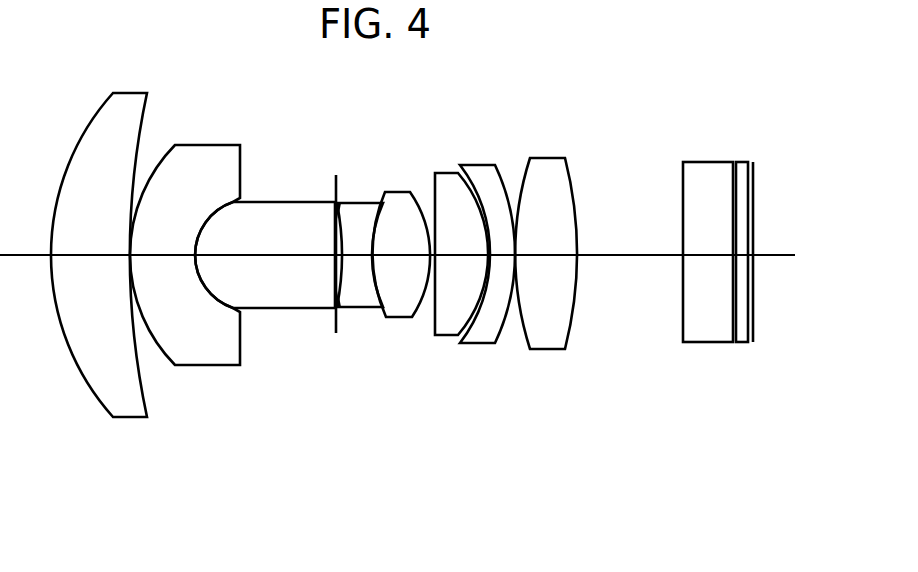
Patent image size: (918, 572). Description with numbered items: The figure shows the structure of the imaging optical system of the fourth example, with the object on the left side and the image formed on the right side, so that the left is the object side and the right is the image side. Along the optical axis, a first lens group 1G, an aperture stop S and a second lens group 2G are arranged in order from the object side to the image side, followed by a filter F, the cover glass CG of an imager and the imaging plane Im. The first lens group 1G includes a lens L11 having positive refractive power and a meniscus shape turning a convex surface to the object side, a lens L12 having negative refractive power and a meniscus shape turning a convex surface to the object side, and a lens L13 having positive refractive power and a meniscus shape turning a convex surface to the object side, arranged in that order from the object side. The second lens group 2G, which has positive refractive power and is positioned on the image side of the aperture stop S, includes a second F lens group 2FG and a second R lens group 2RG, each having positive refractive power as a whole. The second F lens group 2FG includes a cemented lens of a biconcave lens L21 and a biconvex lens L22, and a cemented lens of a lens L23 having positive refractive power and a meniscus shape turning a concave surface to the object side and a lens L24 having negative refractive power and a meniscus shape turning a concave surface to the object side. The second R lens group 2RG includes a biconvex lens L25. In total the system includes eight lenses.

The lens L11 is at (140, 408).
The lens L12 is at (208, 357).
The lens L13 is at (265, 279).
The first lens group 1G is at (193, 289).
The aperture stop S is at (337, 186).
The lens L21 is at (355, 297).
The lens L22 is at (398, 310).
The lens L23 is at (448, 330).
The lens L24 is at (487, 282).
The lens L25 is at (550, 338).
The second F lens group 2FG is at (426, 324).
The second R lens group 2RG is at (551, 321).
The second lens group 2G is at (462, 351).
The filter F is at (703, 166).
The cover glass CG is at (746, 166).
The imaging plane Im is at (753, 172).